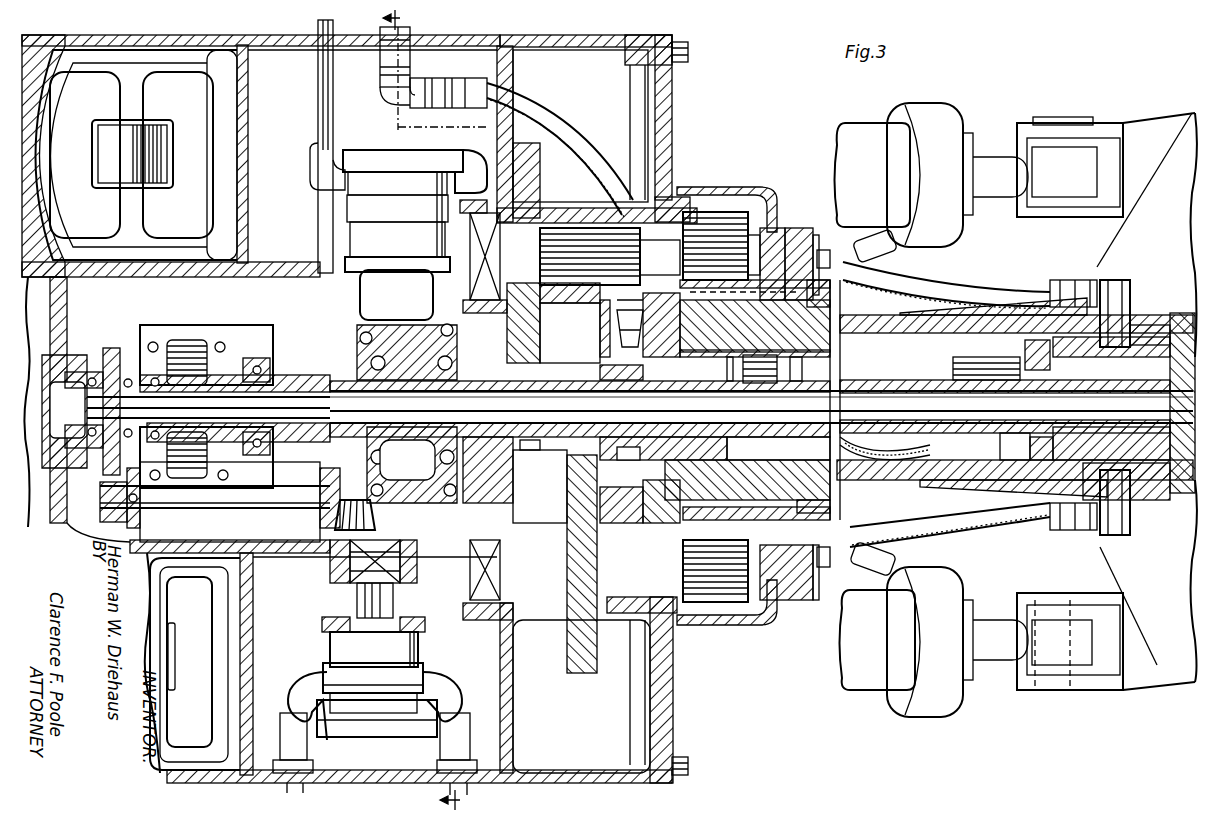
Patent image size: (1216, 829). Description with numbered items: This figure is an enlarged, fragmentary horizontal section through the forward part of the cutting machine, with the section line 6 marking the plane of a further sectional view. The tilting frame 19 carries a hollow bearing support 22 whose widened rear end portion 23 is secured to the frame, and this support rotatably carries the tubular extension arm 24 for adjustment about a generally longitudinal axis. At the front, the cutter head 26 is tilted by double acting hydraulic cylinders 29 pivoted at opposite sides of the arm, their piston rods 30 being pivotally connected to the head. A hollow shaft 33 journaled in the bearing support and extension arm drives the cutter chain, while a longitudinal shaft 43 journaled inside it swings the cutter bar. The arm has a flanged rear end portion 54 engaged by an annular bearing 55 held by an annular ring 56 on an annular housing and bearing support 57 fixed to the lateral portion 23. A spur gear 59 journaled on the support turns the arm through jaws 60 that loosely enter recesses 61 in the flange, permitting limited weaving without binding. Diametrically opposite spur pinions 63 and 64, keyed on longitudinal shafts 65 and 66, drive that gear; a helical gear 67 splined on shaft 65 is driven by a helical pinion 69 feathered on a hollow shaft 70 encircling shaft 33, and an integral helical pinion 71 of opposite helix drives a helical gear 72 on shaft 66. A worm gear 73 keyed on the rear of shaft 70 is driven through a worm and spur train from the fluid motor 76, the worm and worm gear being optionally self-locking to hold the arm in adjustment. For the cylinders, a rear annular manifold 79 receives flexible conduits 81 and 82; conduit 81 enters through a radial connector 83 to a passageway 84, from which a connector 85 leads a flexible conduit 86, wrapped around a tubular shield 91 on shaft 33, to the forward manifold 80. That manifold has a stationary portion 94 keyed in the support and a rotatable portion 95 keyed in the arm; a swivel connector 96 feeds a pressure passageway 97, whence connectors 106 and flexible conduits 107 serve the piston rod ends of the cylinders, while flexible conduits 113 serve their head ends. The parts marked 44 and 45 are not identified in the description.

The section line 6- 6 is at (412, 409).
The tilting frame 19 is at (525, 40).
The hollow bearing support 22 is at (868, 310).
The widened rear end portion 23 is at (698, 112).
The tubular extension arm 24 is at (960, 295).
The cutter head 26 is at (1150, 680).
The double acting hydraulic cylinders 29 is at (866, 125).
The piston rods 30 is at (992, 157).
The hollow shaft 33 is at (325, 390).
The longitudinal shaft 43 is at (300, 430).
The motor 44 is at (425, 652).
The bevel gear shaft 45 is at (395, 528).
The flanged rear end portion 54 is at (805, 595).
The annular bearing 55 is at (815, 235).
The annular ring 56 is at (825, 250).
The annular housing and bearing support 57 is at (765, 622).
The spur gear 59 is at (770, 228).
The jaws 60 is at (790, 228).
The recesses 61 is at (795, 600).
The spur pinion 63 is at (712, 212).
The spur pinion 64 is at (722, 600).
The longitudinal shaft 65 is at (598, 220).
The longitudinal shaft 66 is at (678, 625).
The helical gear 67 is at (540, 170).
The helical pinion 69 is at (572, 330).
The hollow shaft 70 is at (515, 480).
The helical pinion 71 is at (555, 455).
The helical gear 72 is at (567, 645).
The worm gear 73 is at (400, 310).
The fluid motor 76 is at (345, 228).
The annular manifold 79 is at (622, 520).
The annular manifold 80 is at (999, 446).
The flexible conduit 81 is at (590, 170).
The flexible conduit 82 is at (565, 100).
The radially extending connector 83 is at (618, 315).
The passageway 84 is at (620, 350).
The connector 85 is at (762, 425).
The flexible conduit 86 is at (795, 428).
The tubular shield 91 is at (925, 440).
The stationary portion 94 is at (1030, 450).
The rotatable portion 95 is at (1155, 325).
The connector 96 is at (1000, 357).
The pressure passageway 97 is at (1050, 340).
The connectors 106 is at (1125, 280).
The flexible conduits 107 is at (1020, 280).
The flexible conduits 113 is at (900, 312).